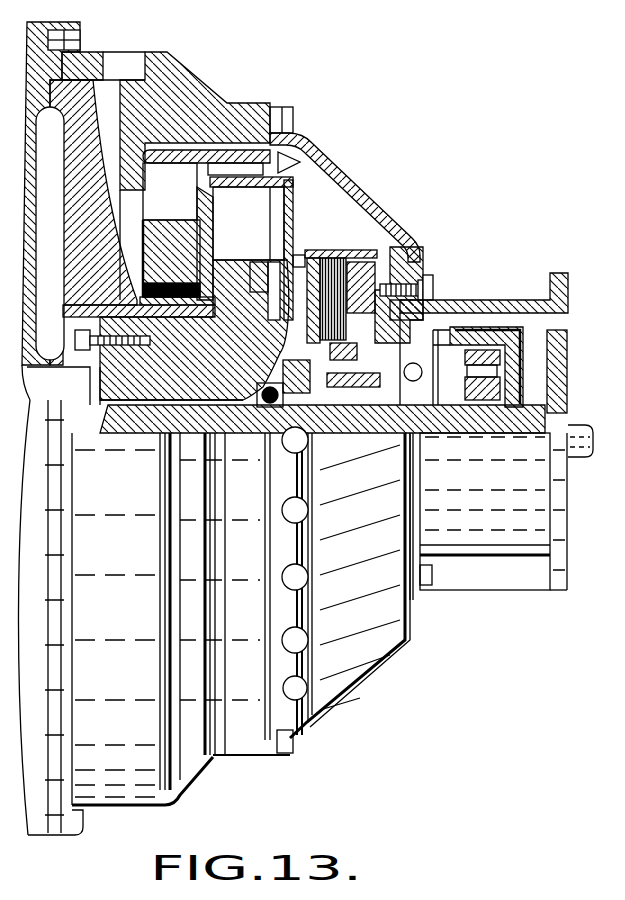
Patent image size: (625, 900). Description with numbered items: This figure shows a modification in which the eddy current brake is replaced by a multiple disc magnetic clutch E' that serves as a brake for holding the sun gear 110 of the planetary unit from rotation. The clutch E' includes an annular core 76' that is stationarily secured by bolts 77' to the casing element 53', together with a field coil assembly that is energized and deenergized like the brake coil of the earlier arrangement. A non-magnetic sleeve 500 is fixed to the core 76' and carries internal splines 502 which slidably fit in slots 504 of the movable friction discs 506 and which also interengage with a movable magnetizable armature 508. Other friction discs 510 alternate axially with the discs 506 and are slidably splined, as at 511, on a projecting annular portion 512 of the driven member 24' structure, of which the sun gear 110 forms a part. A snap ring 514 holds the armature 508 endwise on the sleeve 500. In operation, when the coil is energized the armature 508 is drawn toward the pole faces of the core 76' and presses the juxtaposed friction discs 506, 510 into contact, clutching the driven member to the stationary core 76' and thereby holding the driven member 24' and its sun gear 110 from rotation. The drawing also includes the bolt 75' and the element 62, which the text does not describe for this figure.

The casing element 53' is at (345, 197).
The internal splines 502 is at (344, 260).
The non-magnetic sleeve 500 is at (365, 275).
The multiple disc magnetic clutch E' is at (413, 268).
The movable friction discs 506 is at (375, 270).
The annular core 76' is at (445, 274).
The bolts 77' is at (453, 281).
The bolt 75' is at (430, 291).
The driven member 24' is at (272, 248).
The slots 504 is at (332, 252).
The snap ring 514 is at (293, 261).
The movable magnetizable armature 508 is at (249, 277).
The winding 62 is at (171, 258).
The splines 511 is at (194, 330).
The friction discs 510 is at (355, 340).
The projecting annular portion 512 is at (296, 403).
The sun gear 110 is at (322, 427).